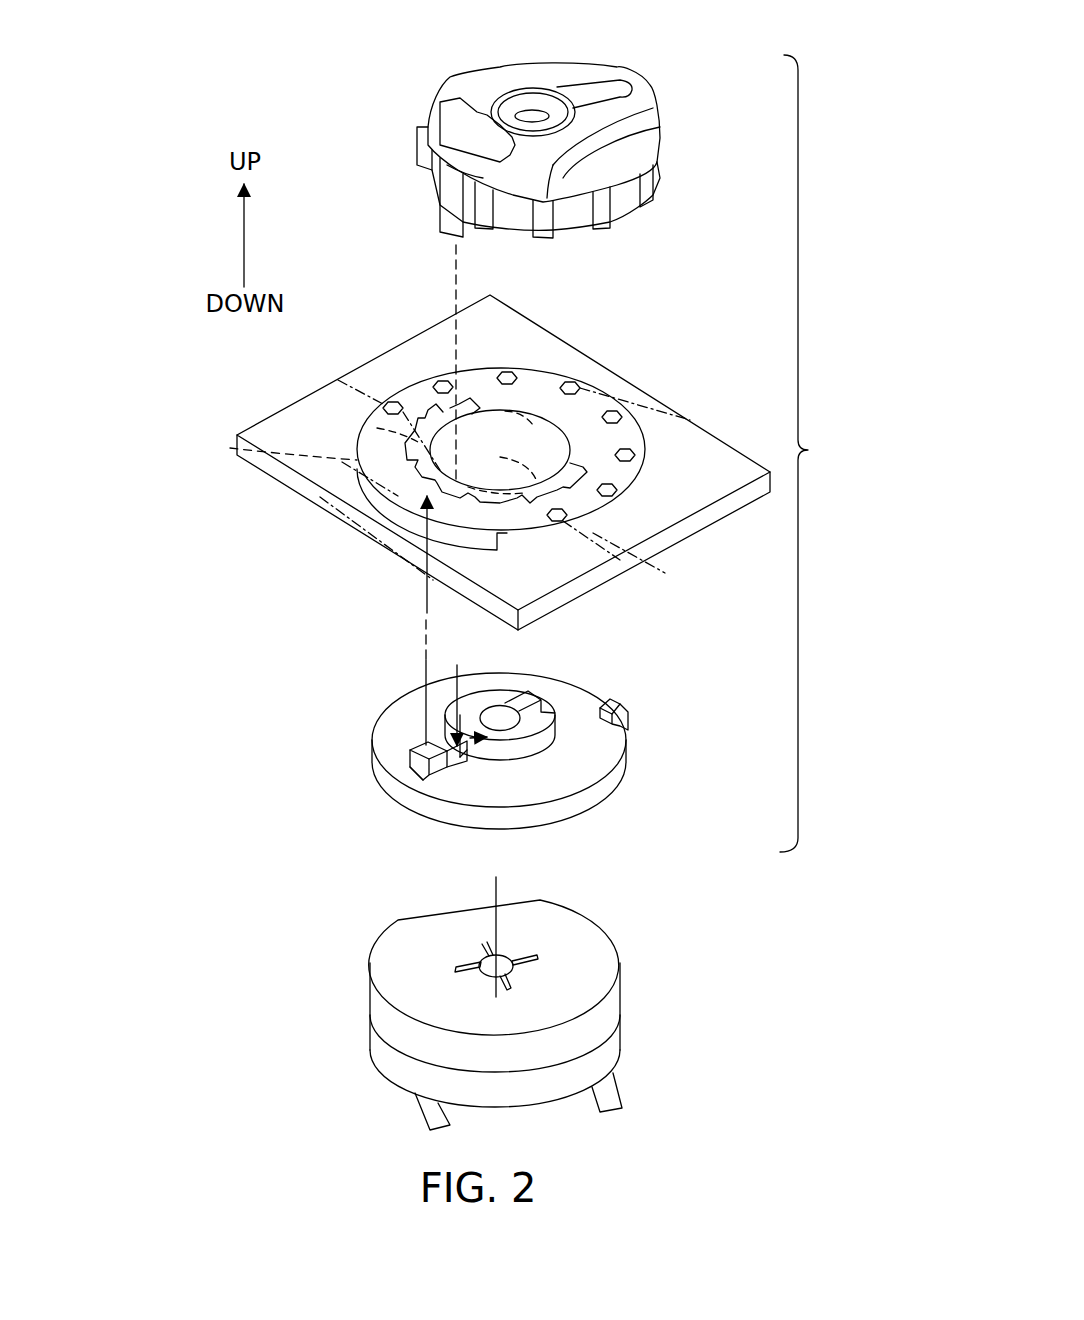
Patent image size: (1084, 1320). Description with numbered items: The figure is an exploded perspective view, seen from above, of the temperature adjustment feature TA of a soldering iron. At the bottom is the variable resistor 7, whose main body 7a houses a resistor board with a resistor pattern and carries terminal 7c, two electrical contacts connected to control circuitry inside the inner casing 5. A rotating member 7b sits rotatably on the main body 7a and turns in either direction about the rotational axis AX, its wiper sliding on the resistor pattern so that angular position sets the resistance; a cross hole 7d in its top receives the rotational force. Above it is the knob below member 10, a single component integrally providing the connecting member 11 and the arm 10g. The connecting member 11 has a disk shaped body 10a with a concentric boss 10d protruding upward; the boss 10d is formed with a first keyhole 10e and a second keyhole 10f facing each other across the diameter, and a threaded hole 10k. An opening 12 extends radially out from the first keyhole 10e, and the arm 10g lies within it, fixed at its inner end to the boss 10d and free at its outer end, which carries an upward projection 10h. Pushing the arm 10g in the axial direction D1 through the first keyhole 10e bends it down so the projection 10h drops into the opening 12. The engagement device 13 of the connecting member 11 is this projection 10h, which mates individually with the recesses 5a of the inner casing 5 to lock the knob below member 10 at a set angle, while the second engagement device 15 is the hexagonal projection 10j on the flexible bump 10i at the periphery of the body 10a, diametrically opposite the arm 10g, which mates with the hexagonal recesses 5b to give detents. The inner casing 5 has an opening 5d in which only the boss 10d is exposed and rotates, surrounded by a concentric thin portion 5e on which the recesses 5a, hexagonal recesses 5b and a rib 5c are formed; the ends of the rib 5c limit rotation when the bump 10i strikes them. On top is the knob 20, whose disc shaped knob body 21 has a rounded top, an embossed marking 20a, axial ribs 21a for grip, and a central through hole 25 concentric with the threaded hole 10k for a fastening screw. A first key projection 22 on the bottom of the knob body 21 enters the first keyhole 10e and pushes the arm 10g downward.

The knob 20 is at (381, 100).
The marking 20a is at (458, 125).
The through hole 25 is at (530, 112).
The knob body 21 is at (665, 165).
The ribs 21a is at (613, 211).
The first key projection 22 is at (430, 211).
The inner casing 5 is at (722, 445).
The recess 5a is at (420, 400).
The hexagonal recess 5b is at (441, 380).
The rib 5c is at (232, 449).
The opening 5d is at (508, 412).
The thin portion 5e is at (650, 386).
The knob below member 10 is at (518, 738).
The body 10a is at (597, 770).
The boss 10d is at (527, 762).
The first keyhole 10e is at (473, 737).
The second keyhole 10f is at (506, 702).
The arm 10g is at (455, 768).
The projection 10h is at (416, 752).
The bump 10i is at (620, 720).
The hexagonal projection 10j is at (612, 698).
The threaded hole 10k is at (503, 715).
The connecting member 11 is at (655, 757).
The opening 12 is at (414, 774).
The engagement device 13 is at (409, 714).
The second engagement device 15 is at (665, 666).
The axial direction D1 is at (461, 691).
The variable resistor 7 is at (494, 1000).
The main body 7a is at (383, 1052).
The rotating member 7b is at (570, 935).
The terminal 7c is at (428, 1115).
The cross hole 7d is at (496, 977).
The axis AX is at (493, 900).
The temperature adjustment feature TA is at (810, 453).